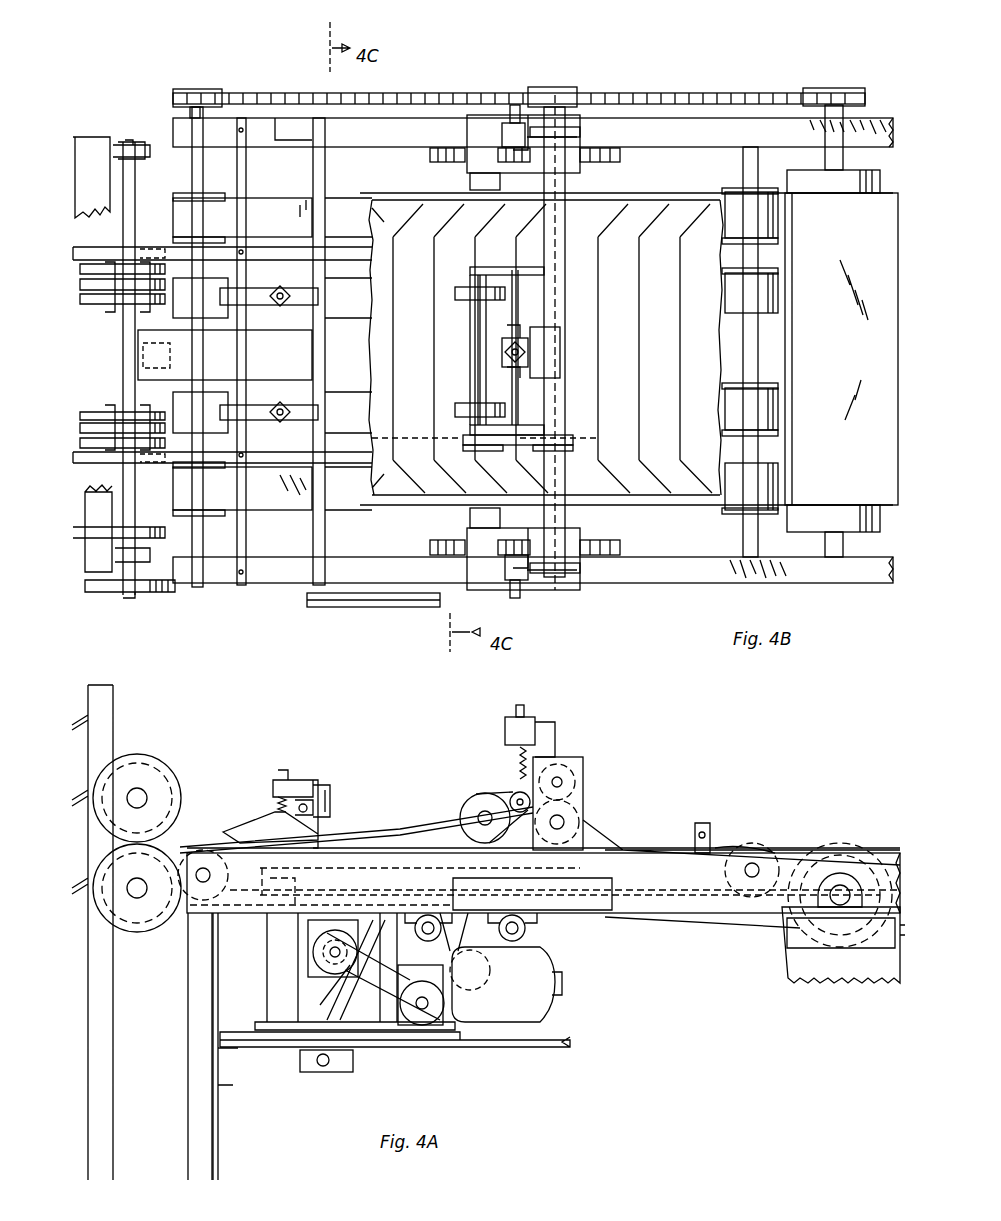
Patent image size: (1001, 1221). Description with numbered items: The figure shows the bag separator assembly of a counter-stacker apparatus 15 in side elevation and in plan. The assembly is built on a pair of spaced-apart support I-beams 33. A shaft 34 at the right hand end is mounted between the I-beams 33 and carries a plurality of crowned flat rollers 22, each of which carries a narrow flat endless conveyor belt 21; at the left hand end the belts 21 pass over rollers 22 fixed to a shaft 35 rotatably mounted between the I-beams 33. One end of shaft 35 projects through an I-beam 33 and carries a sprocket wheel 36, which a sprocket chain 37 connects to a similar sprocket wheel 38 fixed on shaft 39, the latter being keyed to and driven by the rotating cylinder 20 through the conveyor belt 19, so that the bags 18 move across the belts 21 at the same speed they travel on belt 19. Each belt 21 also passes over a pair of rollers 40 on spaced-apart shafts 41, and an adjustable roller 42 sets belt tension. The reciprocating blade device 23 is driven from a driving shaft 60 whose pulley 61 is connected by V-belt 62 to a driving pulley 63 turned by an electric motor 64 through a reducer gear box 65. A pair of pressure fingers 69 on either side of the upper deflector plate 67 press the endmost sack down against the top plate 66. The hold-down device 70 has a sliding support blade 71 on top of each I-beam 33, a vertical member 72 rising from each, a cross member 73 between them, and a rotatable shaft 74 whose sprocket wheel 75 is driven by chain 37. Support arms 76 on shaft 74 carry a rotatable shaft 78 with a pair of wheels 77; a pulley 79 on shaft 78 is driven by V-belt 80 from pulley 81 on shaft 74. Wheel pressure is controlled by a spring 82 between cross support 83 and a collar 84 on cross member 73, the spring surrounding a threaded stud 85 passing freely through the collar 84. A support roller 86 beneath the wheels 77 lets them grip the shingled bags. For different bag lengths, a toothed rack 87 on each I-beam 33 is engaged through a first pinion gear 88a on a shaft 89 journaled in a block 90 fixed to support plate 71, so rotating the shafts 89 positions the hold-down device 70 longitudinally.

In FIG. 4B, the web 15 is at (687, 78).
In FIG. 4A, the web 15 is at (621, 817).
In FIG. 4B, the bags 18 is at (668, 351).
In FIG. 4B, the conveyor belt 19 is at (858, 332).
In FIG. 4A, the conveyor belt 19 is at (875, 849).
In FIG. 4B, the rotating cylinder 20 is at (850, 176).
In FIG. 4A, the rotating cylinder 20 is at (830, 920).
In FIG. 4B, the conveyor belt 21 is at (288, 202).
In FIG. 4A, the conveyor belt 21 is at (712, 853).
In FIG. 4B, the crowned flat roller 22 is at (178, 193).
In FIG. 4A, the crowned flat roller 22 is at (753, 848).
In FIG. 4A, the reciprocating blade device 23 is at (255, 964).
In FIG. 4B, the support I-beam 33 is at (705, 137).
In FIG. 4A, the support I-beam 33 is at (555, 898).
In FIG. 4B, the shaft 34 is at (742, 530).
In FIG. 4A, the shaft 34 is at (755, 867).
In FIG. 4B, the shaft 35 is at (203, 150).
In FIG. 4A, the shaft 35 is at (210, 875).
In FIG. 4B, the sprocket wheel 36 is at (190, 88).
In FIG. 4B, the sprocket chain 37 is at (400, 88).
In FIG. 4A, the sprocket chain 37 is at (357, 829).
In FIG. 4B, the sprocket wheel 38 is at (845, 88).
In FIG. 4B, the shaft 39 is at (843, 108).
In FIG. 4A, the shaft 39 is at (838, 905).
In FIG. 4A, the roller 40 is at (410, 938).
In FIG. 4A, the shaft 41 is at (513, 923).
In FIG. 4A, the adjustable roller 42 is at (482, 963).
In FIG. 4A, the driving shaft 60 is at (330, 952).
In FIG. 4A, the pulley 61 is at (313, 933).
In FIG. 4A, the V-belt 62 is at (373, 970).
In FIG. 4A, the driving pulley 63 is at (423, 1010).
In FIG. 4A, the electric motor 64 is at (518, 998).
In FIG. 4A, the reducer gear box 65 is at (450, 1011).
In FIG. 4A, the top plate 66 is at (175, 835).
In FIG. 4B, the upper deflector plate 67 is at (210, 363).
In FIG. 4B, the pressure finger 69 is at (257, 404).
In FIG. 4A, the pressure finger 69 is at (255, 804).
In FIG. 4B, the hold-down device 70 is at (460, 356).
In FIG. 4A, the hold-down device 70 is at (598, 752).
In FIG. 4B, the sliding support blade 71 is at (466, 140).
In FIG. 4B, the vertical member 72 is at (580, 131).
In FIG. 4B, the cross member 73 is at (563, 286).
In FIG. 4A, the cross member 73 is at (579, 742).
In FIG. 4B, the rotatable shaft 74 is at (560, 318).
In FIG. 4A, the rotatable shaft 74 is at (562, 780).
In FIG. 4B, the sprocket wheel 75 is at (548, 87).
In FIG. 4A, the sprocket wheel 75 is at (582, 782).
In FIG. 4B, the support arm 76 is at (505, 267).
In FIG. 4B, the wheel 77 is at (456, 288).
In FIG. 4B, the rotatable shaft 78 is at (480, 334).
In FIG. 4B, the pulley 79 is at (475, 427).
In FIG. 4B, the V-belt 80 is at (525, 432).
In FIG. 4B, the pulley 81 is at (568, 442).
In FIG. 4A, the spring 82 is at (517, 765).
In FIG. 4B, the cross support 83 is at (510, 306).
In FIG. 4A, the collar 84 is at (505, 721).
In FIG. 4A, the threaded stud 85 is at (517, 705).
In FIG. 4B, the support roller 86 is at (470, 513).
In FIG. 4B, the toothed rack 87 is at (607, 158).
In FIG. 4B, the first pinion gear 88a is at (488, 167).
In FIG. 4B, the shaft 89 is at (510, 105).
In FIG. 4B, the block 90 is at (502, 130).